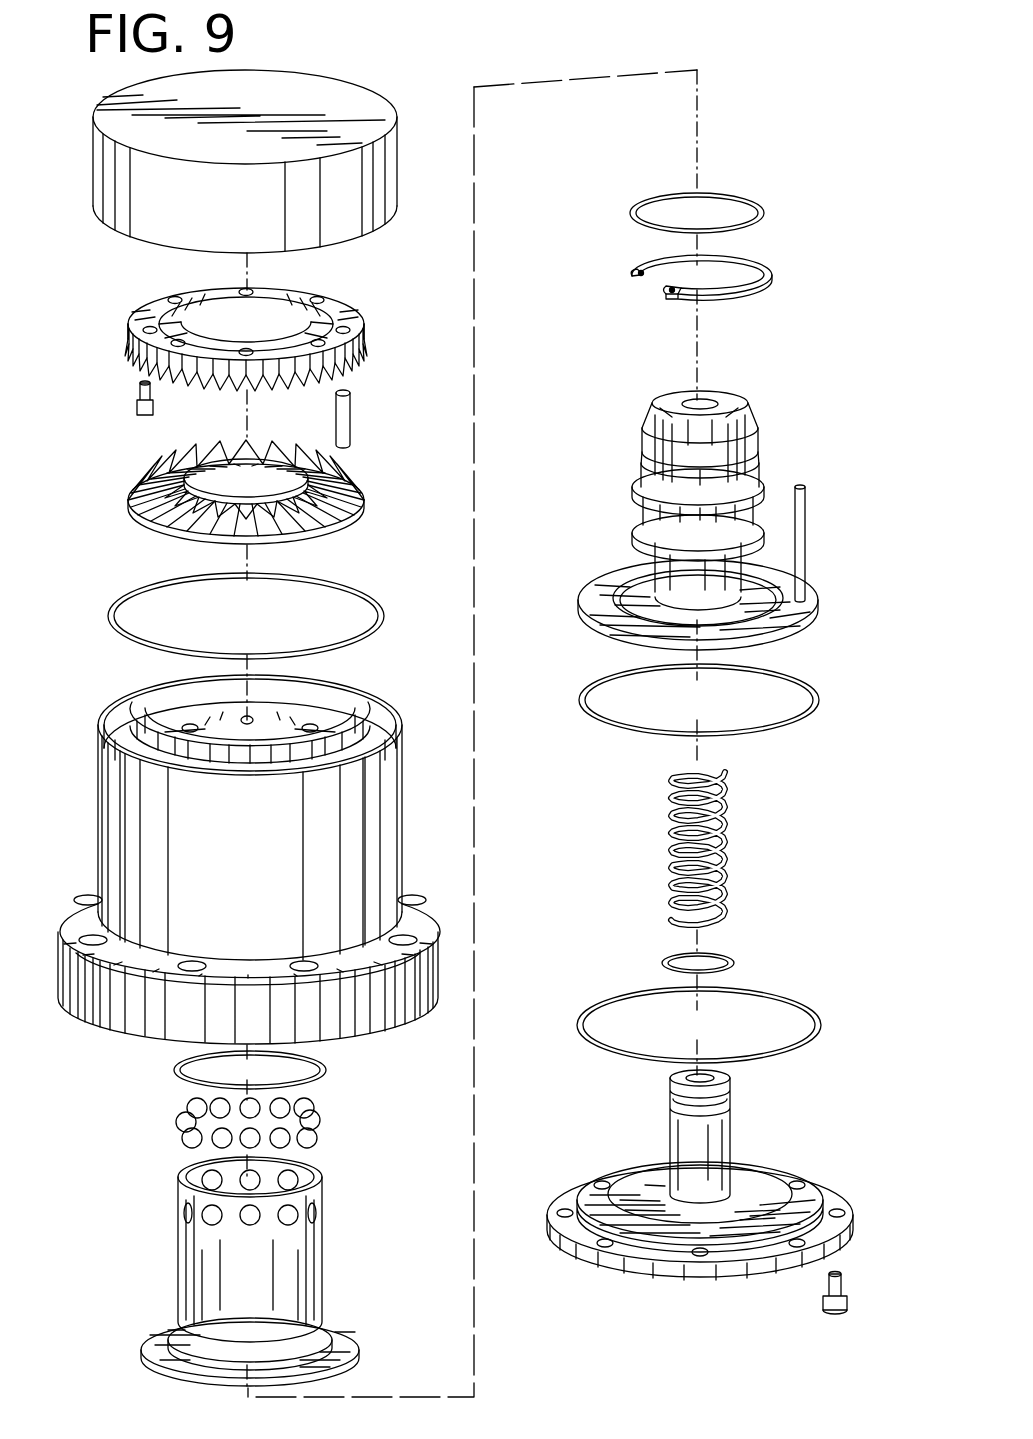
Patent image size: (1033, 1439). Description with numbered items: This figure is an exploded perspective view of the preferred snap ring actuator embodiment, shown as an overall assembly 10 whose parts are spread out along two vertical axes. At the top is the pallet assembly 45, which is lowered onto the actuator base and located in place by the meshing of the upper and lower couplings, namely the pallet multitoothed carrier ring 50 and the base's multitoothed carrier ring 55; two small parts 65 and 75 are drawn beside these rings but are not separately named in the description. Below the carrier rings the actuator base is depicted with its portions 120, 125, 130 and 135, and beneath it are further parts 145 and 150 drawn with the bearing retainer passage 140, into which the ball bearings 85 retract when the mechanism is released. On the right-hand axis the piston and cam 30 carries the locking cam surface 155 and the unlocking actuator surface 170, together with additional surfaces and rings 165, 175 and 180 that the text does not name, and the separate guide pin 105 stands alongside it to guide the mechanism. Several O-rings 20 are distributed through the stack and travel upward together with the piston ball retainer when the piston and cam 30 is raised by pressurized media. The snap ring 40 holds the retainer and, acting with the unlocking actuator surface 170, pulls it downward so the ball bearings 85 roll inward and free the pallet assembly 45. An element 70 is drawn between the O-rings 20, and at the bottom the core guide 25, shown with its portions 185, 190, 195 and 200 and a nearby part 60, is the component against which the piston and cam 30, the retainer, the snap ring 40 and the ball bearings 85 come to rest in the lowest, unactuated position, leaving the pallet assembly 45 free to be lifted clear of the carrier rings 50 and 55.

The valve actuator assembly 10 is at (434, 70).
The pallet assembly 45 is at (220, 214).
The pallet multitoothed carrier ring 50 is at (150, 296).
The screw 65 is at (138, 408).
The pin 75 is at (348, 405).
The multitoothed carrier ring 55 is at (125, 492).
The O-rings 20 is at (152, 580).
The snap ring 40 is at (762, 278).
The piston and cam 30 is at (636, 470).
The locking cam surface 155 is at (750, 420).
The upper flange ring 165 is at (756, 487).
The unlocking actuator surface 170 is at (642, 548).
The raised ring 175 is at (608, 583).
The base plate 180 is at (600, 612).
The guide pin 105 is at (806, 517).
The housing 120 is at (102, 720).
The inner ring 125 is at (130, 700).
The inner floor 130 is at (290, 712).
The cylindrical wall 135 is at (165, 811).
The ball bearings 85 is at (186, 1116).
The bearing retainer passage 140 is at (180, 1207).
The cage body 145 is at (269, 1283).
The cage flange 150 is at (172, 1340).
The spring 70 is at (720, 826).
The core guide 25 is at (733, 1130).
The hub 185 is at (737, 1096).
The base flange 190 is at (790, 1177).
The raised ring 195 is at (826, 1215).
The inner recess 200 is at (842, 1220).
The screw 60 is at (850, 1302).